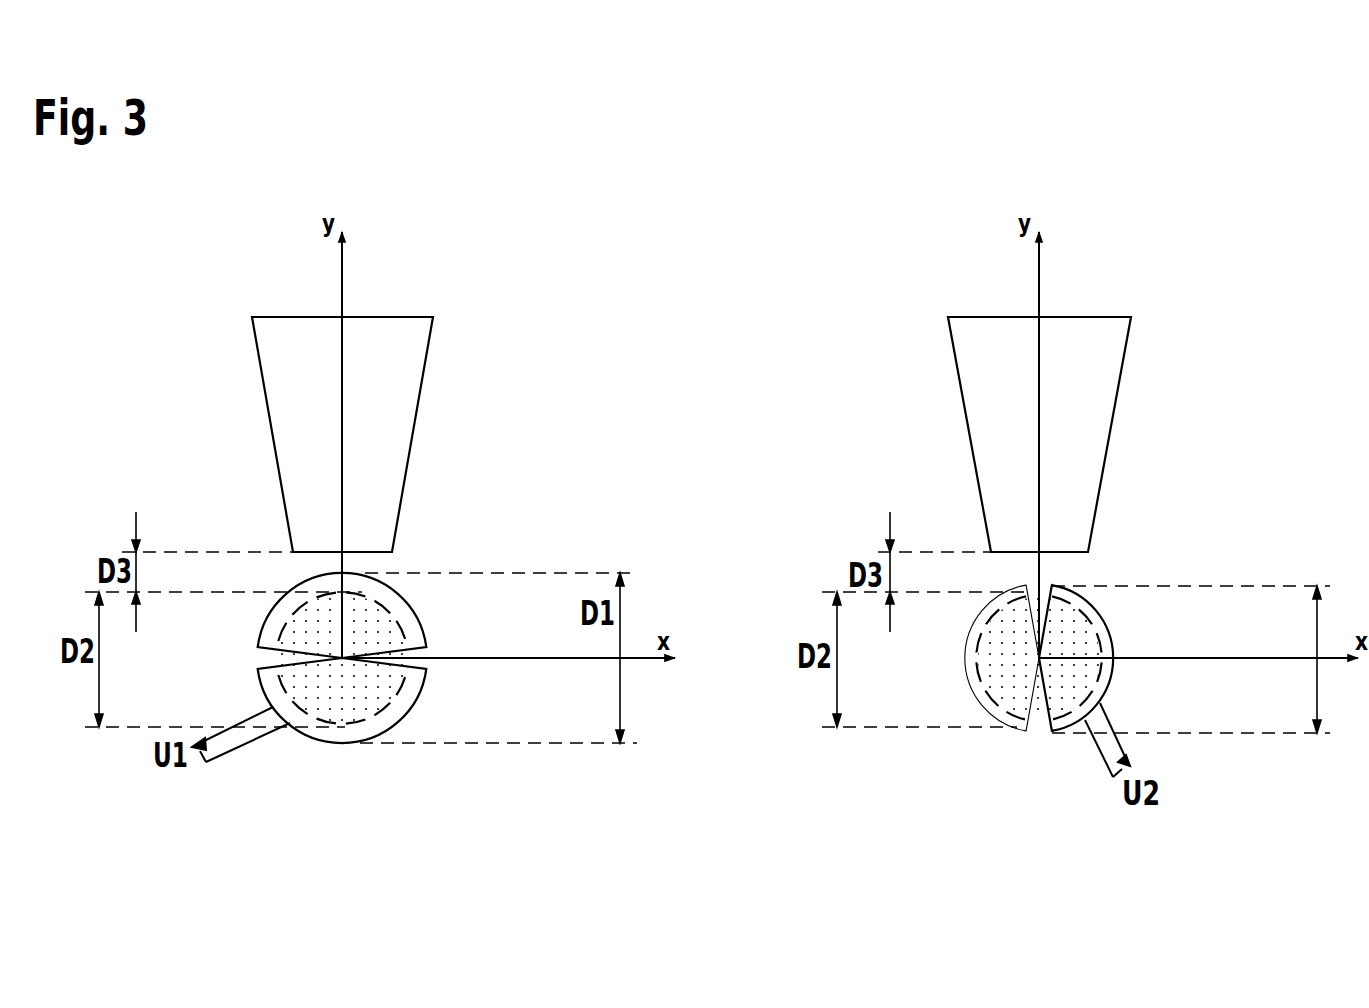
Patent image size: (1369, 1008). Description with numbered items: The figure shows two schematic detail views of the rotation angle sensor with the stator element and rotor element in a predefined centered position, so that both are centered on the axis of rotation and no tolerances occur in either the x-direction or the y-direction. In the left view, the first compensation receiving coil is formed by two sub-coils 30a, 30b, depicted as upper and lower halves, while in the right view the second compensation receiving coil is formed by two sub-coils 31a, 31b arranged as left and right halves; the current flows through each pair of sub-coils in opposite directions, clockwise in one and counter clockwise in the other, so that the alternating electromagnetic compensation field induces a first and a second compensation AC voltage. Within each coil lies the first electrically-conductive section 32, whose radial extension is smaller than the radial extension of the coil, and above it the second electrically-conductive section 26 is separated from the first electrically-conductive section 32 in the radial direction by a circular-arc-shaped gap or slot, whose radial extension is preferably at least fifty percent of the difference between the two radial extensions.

The second electrically-conductive section 26 is at (366, 338).
The sub-coil of first compensation receiving coil 30a is at (313, 740).
The sub-coil of first compensation receiving coil 30b is at (404, 598).
The sub-coil of second compensation receiving coil 31a is at (984, 709).
The sub-coil of second compensation receiving coil 31b is at (1087, 600).
The first electrically-conductive section 32 is at (392, 683).